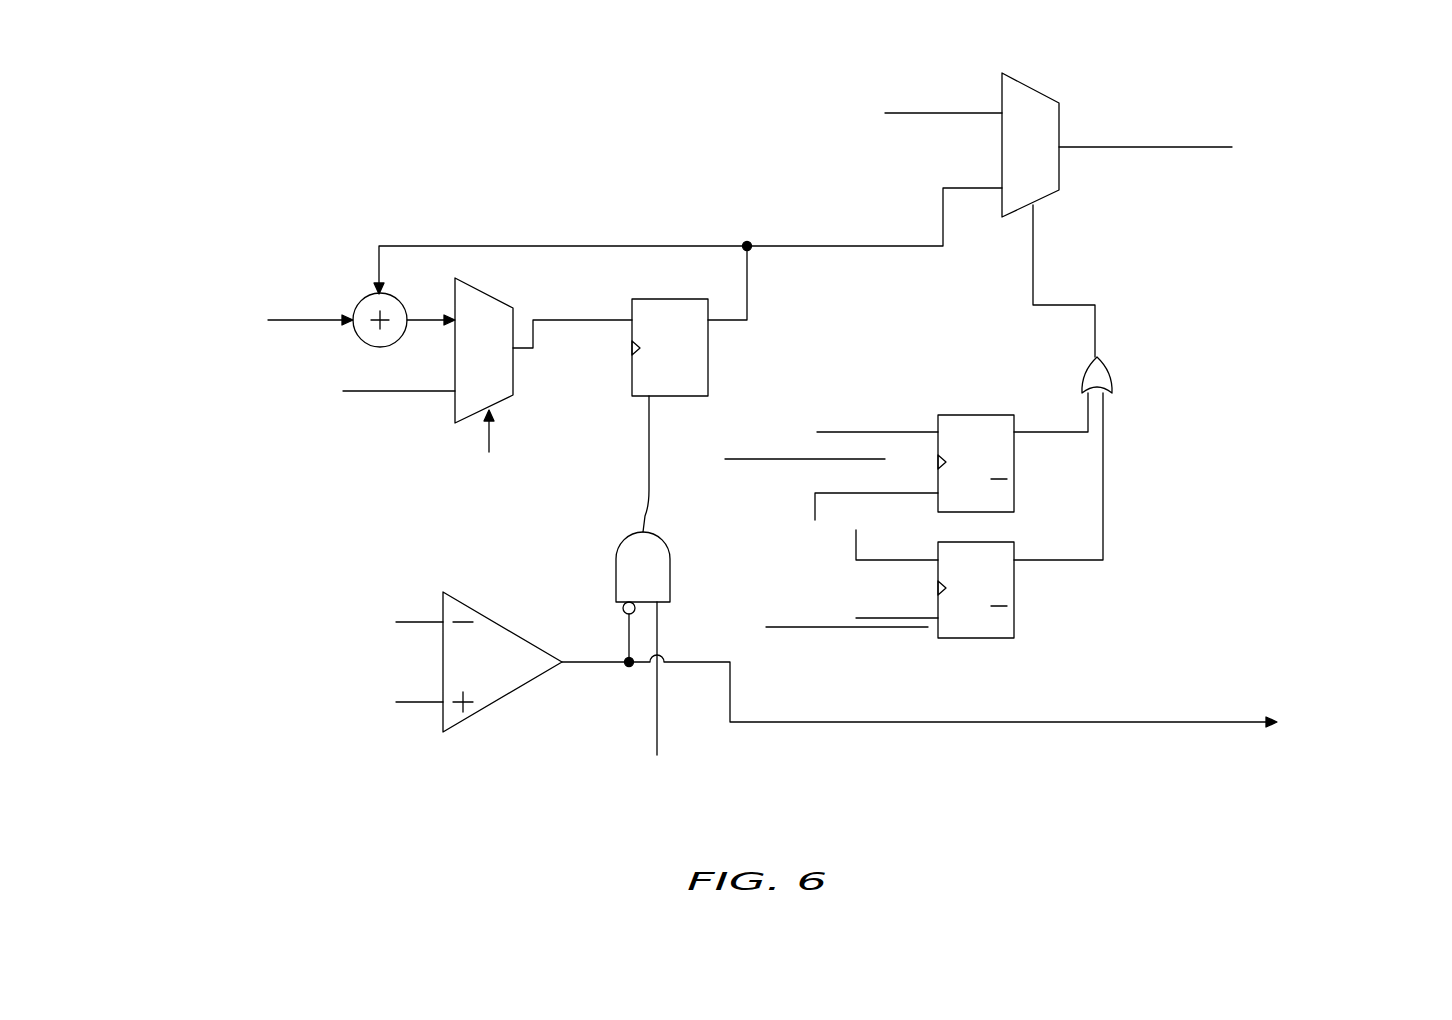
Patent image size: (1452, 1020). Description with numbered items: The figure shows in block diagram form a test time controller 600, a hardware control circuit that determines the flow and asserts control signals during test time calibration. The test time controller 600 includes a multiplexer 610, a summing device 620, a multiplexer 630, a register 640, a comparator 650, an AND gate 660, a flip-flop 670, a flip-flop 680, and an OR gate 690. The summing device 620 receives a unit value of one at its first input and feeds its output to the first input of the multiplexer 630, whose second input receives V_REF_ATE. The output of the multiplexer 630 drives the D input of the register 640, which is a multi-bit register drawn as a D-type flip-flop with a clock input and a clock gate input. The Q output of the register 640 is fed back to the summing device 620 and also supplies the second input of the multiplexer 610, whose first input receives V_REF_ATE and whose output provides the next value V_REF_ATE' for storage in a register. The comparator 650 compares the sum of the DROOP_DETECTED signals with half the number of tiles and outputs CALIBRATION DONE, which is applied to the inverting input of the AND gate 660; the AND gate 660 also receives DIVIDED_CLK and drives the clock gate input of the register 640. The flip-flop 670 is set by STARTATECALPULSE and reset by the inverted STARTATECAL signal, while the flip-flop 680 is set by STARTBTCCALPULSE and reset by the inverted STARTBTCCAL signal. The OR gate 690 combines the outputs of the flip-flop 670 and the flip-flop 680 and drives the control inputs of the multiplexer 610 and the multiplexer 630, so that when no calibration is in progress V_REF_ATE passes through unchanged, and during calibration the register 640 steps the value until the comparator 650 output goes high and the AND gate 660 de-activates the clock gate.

The test time controller 600 is at (216, 100).
The multiplexer 610 is at (1035, 88).
The summing device 620 is at (357, 300).
The multiplexer 630 is at (497, 296).
The register 640 is at (652, 298).
The comparator 650 is at (470, 607).
The AND gate 660 is at (672, 548).
The flip-flop 670 is at (977, 414).
The flip-flop 680 is at (998, 541).
The OR gate 690 is at (1107, 372).